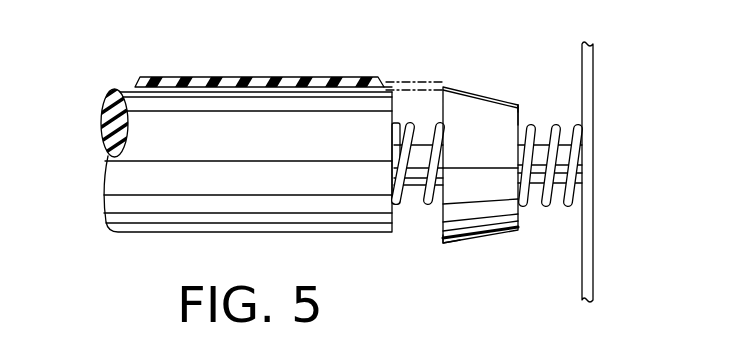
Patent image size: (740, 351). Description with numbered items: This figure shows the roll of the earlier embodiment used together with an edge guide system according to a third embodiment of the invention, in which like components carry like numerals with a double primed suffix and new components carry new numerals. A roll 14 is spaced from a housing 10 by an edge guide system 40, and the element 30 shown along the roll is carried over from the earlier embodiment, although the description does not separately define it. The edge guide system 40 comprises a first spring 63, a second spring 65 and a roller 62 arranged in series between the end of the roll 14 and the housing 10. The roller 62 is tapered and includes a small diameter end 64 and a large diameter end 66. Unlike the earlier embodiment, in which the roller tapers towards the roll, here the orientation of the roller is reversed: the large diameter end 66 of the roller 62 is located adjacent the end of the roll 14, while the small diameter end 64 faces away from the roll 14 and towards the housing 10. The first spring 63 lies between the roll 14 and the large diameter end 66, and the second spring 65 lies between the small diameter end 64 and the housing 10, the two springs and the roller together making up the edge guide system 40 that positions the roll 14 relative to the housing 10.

The housing 10 is at (592, 221).
The roll 14 is at (117, 200).
The retaining strip 30 is at (220, 78).
The edge guide system 40 is at (523, 98).
The roller 62 is at (488, 213).
The first spring 63 is at (413, 122).
The small diameter end 64 is at (547, 66).
The second spring 65 is at (558, 208).
The large diameter end 66 is at (445, 246).